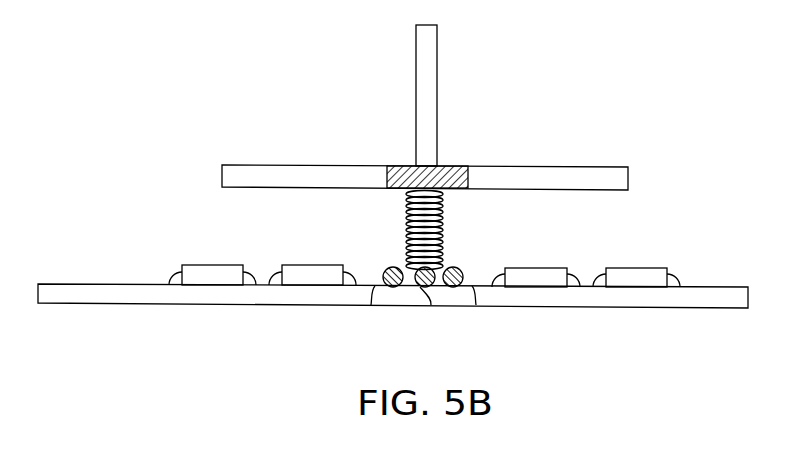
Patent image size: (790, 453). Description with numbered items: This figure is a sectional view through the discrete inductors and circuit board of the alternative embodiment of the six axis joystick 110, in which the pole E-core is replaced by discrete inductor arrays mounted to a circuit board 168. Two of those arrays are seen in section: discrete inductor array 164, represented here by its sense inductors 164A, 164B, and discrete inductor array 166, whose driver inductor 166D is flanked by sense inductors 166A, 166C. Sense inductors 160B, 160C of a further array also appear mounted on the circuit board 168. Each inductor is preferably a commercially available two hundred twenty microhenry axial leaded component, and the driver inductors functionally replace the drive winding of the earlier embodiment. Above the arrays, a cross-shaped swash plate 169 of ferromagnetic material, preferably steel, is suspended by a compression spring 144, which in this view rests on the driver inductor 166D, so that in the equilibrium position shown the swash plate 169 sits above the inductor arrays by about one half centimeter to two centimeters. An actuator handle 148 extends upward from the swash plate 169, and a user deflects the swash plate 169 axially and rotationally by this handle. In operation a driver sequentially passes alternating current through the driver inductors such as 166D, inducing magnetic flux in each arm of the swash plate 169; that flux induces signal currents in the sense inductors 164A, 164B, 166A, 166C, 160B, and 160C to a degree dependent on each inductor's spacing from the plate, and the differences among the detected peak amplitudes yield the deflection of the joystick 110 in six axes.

The six axis joystick 110 is at (366, 88).
The actuator handle 148 is at (433, 56).
The swash plate 169 is at (310, 173).
The discrete inductor array 166 is at (460, 250).
The compression spring 144 is at (410, 226).
The circuit board 168 is at (167, 298).
The discrete inductor array 164 is at (170, 257).
The sense inductor 164A is at (290, 271).
The sense inductor 164B is at (192, 271).
The sense inductor 160B is at (617, 272).
The sense inductor 160C is at (516, 272).
The sense inductor 166A is at (476, 305).
The sense inductor 166C is at (371, 305).
The driver inductor 166D is at (431, 305).